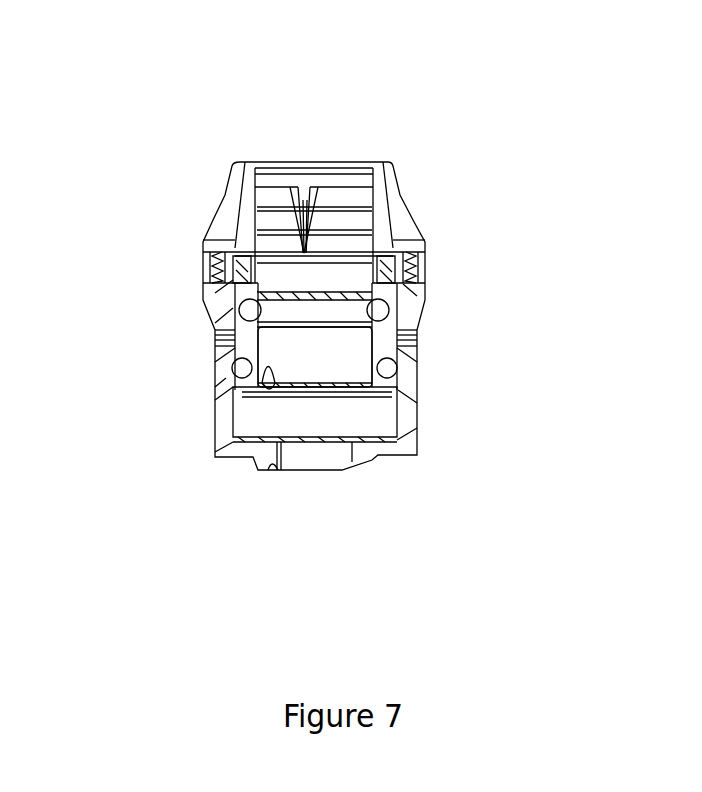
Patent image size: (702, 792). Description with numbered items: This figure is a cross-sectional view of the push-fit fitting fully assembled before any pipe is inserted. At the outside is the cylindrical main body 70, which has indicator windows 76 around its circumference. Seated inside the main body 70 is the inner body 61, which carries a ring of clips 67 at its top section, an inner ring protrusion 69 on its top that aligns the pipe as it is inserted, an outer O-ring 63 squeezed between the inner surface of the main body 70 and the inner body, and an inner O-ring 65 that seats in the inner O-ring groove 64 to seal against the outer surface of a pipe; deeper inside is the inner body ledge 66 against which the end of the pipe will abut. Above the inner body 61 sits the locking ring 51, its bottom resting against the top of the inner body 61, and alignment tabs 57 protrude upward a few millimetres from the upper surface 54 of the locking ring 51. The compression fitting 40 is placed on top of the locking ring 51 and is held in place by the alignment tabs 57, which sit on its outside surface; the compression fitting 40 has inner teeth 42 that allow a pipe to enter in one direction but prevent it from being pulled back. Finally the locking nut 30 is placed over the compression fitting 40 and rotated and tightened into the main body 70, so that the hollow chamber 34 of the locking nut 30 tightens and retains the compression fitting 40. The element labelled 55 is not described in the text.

The locking nut 30 is at (172, 196).
The hollow chamber 34 is at (250, 188).
The inner teeth 42 is at (255, 214).
The compression fitting 40 is at (355, 197).
The nozzle orifice 55 is at (307, 290).
The alignment tabs 57 is at (355, 238).
The locking ring 51 is at (418, 276).
The inner O-ring groove 64 is at (410, 281).
The inner ring protrusion 69 is at (240, 245).
The upper surface 54 is at (230, 246).
The clips 67 is at (232, 285).
The indicator windows 76 is at (213, 341).
The main body 70 is at (187, 420).
The inner body 61 is at (383, 340).
The outer O-ring 63 is at (400, 372).
The inner O-ring 65 is at (405, 318).
The inner body ledge 66 is at (276, 375).